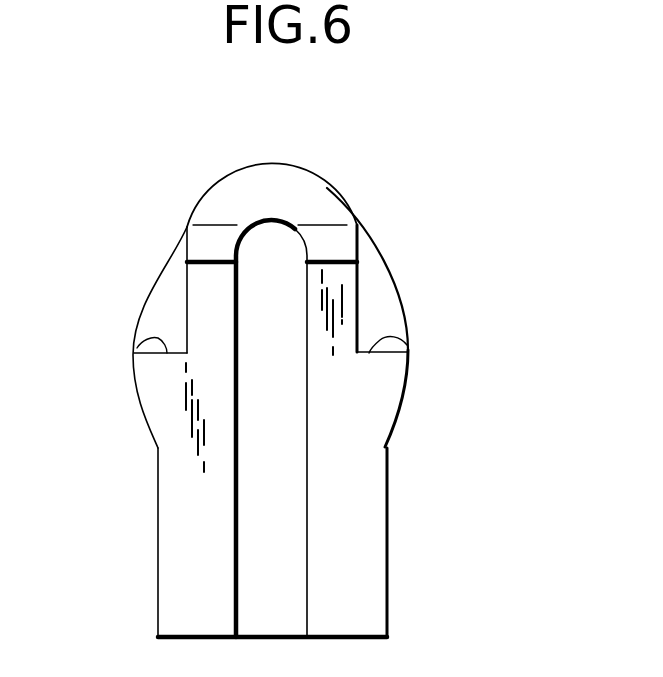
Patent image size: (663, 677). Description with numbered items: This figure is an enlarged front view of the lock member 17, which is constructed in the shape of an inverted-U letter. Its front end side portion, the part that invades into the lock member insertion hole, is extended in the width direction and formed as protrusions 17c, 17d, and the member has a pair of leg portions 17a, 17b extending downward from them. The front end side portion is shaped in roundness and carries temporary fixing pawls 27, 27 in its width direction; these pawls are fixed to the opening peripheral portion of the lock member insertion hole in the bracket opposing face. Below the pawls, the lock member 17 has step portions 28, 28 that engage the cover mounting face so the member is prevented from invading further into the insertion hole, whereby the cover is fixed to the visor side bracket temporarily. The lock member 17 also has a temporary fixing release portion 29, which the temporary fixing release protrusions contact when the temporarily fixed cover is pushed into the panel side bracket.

The lock member 17 is at (405, 212).
The leg portion 17a is at (170, 563).
The leg portion 17b is at (370, 558).
The protrusion 17c is at (260, 188).
The protrusion 17d is at (333, 190).
The temporary fixing pawl 27 is at (203, 265).
The step portion 28 is at (137, 348).
The temporary fixing release portion 29 is at (138, 302).